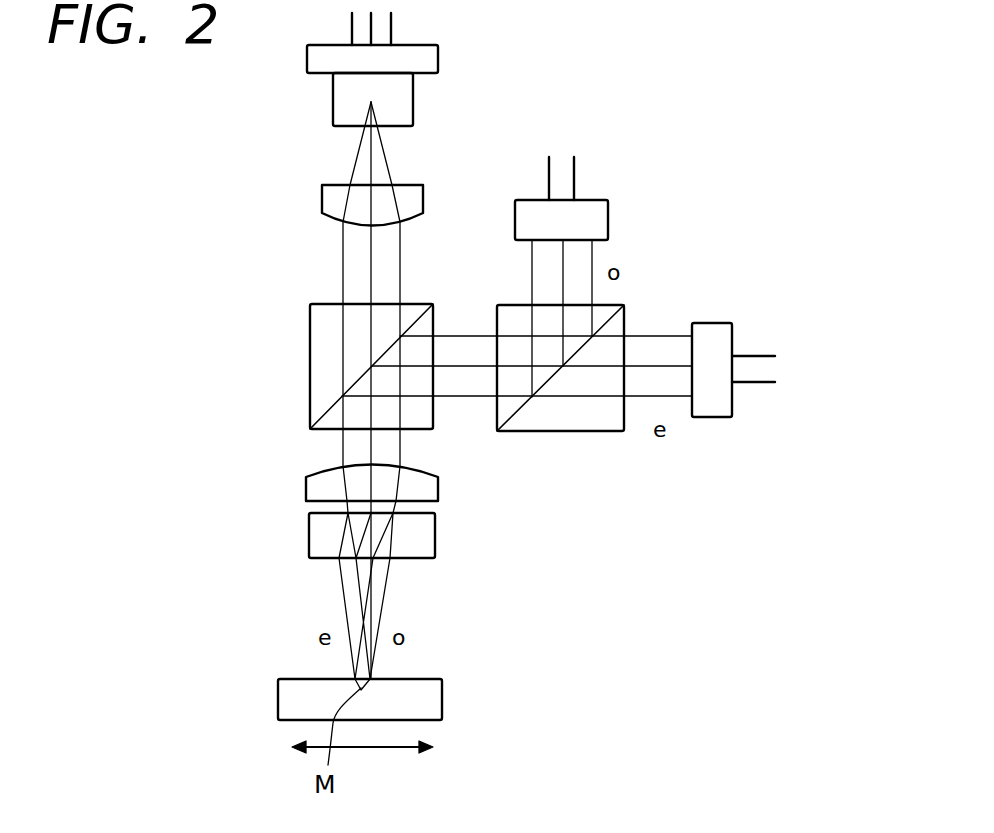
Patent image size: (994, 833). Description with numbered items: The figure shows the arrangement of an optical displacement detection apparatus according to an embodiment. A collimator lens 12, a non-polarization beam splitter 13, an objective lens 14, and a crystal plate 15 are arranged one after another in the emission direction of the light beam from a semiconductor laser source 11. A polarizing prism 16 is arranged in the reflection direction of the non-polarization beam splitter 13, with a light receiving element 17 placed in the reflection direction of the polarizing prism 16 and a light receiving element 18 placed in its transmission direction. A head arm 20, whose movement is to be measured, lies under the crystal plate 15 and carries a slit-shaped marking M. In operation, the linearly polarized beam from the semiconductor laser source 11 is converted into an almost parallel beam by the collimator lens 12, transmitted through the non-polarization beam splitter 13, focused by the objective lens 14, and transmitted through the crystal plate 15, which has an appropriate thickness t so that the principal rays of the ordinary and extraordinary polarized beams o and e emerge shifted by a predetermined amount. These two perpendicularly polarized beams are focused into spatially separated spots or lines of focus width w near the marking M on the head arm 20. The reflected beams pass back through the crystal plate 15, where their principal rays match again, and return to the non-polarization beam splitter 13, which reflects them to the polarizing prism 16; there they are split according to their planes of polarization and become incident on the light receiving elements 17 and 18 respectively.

The semiconductor laser source 11 is at (403, 107).
The collimator lens 12 is at (328, 198).
The non-polarization beam splitter 13 is at (320, 340).
The objective lens 14 is at (315, 487).
The crystal plate 15 is at (322, 538).
The polarizing prism 16 is at (582, 422).
The light receiving element 17 is at (593, 210).
The light receiving element 18 is at (713, 410).
The head arm 20 is at (292, 698).